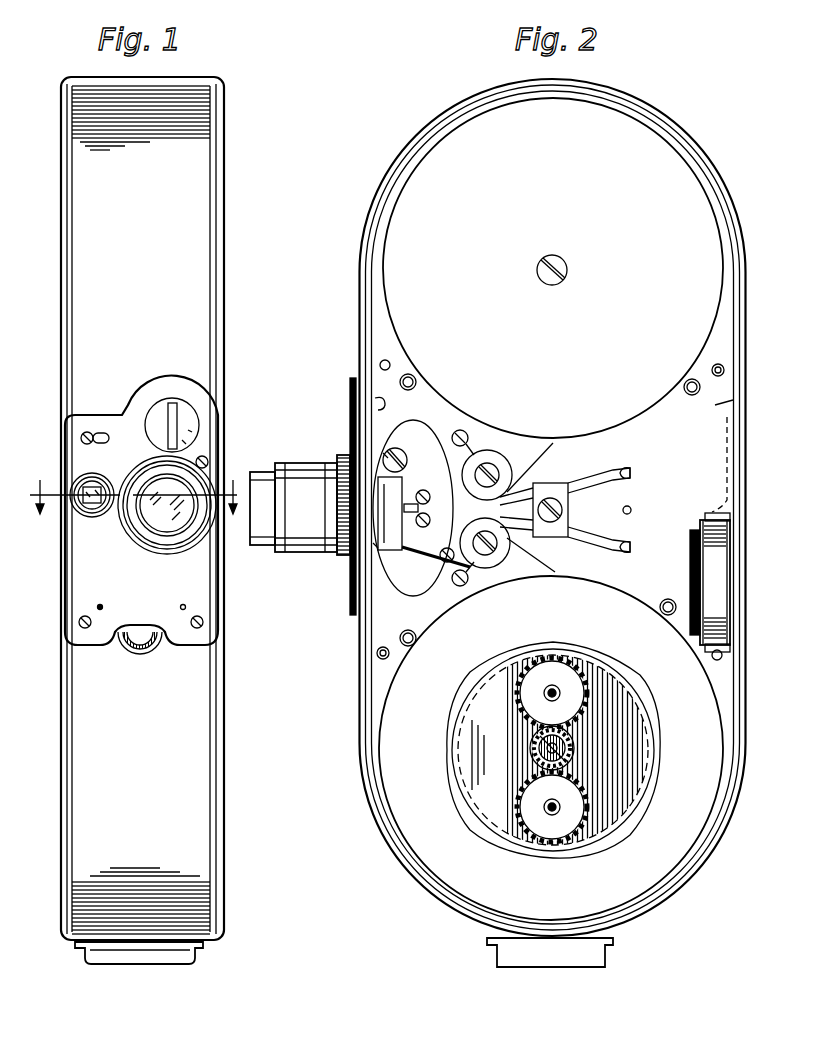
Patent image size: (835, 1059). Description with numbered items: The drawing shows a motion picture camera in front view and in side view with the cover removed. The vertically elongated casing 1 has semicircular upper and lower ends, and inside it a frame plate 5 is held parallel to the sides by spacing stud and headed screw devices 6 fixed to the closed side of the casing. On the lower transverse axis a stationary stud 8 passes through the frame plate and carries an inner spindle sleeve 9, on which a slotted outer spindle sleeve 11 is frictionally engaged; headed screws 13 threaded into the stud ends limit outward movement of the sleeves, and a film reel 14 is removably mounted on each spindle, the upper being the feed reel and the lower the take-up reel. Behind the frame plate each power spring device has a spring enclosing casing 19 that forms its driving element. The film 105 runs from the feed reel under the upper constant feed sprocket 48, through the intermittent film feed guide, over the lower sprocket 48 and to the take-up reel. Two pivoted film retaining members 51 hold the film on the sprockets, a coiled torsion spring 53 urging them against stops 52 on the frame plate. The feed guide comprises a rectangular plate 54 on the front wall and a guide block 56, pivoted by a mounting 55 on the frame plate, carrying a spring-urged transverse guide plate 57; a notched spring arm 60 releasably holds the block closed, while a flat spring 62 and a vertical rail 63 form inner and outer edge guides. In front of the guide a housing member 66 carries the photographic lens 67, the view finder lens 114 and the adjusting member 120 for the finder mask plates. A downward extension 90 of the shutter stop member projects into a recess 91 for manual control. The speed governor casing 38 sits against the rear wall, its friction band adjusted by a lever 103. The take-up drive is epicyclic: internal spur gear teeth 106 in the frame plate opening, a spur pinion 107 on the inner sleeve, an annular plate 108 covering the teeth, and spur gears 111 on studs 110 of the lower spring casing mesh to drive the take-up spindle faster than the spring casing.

In FIG. 1, the casing 1 is at (208, 232).
In FIG. 2, the casing 1 is at (698, 152).
In FIG. 2, the frame plate 5 is at (715, 405).
In FIG. 1, the spacing stud and headed screw devices 6 is at (137, 493).
In FIG. 2, the spacing stud and headed screw devices 6 is at (723, 365).
In FIG. 2, the stationary stud 8 is at (570, 750).
In FIG. 2, the inner spindle sleeve 9 is at (573, 733).
In FIG. 2, the spindle sleeves 11 is at (577, 773).
In FIG. 2, the headed screws 13 is at (566, 265).
In FIG. 2, the film reel 14 is at (425, 172).
In FIG. 2, the spring enclosing casing 19 is at (622, 762).
In FIG. 2, the speed governor casing 38 is at (723, 567).
In FIG. 2, the sprockets 48 is at (488, 457).
In FIG. 2, the film retaining members 51 is at (577, 483).
In FIG. 2, the stops 52 is at (628, 540).
In FIG. 2, the coiled torsion spring 53 is at (523, 483).
In FIG. 2, the rectangular plate 54 is at (375, 400).
In FIG. 2, the mounting 55 is at (383, 453).
In FIG. 2, the guide block 56 is at (402, 490).
In FIG. 2, the transverse guide plate 57 is at (373, 543).
In FIG. 2, the notched spring arm 60 is at (425, 562).
In FIG. 2, the flat spring 62 is at (435, 508).
In FIG. 2, the vertical rail 63 is at (315, 463).
In FIG. 1, the housing member 66 is at (203, 593).
In FIG. 2, the housing member 66 is at (350, 380).
In FIG. 1, the photographic lens 67 is at (180, 530).
In FIG. 2, the photographic lens 67 is at (277, 463).
In FIG. 1, the downward extension 90 is at (117, 650).
In FIG. 1, the recess 91 is at (153, 653).
In FIG. 2, the lever 103 is at (730, 493).
In FIG. 2, the film 105 is at (432, 427).
In FIG. 2, the internal spur gear teeth 106 is at (523, 850).
In FIG. 2, the spur pinion 107 is at (570, 737).
In FIG. 2, the annular plate 108 is at (468, 765).
In FIG. 2, the studs 110 is at (556, 686).
In FIG. 2, the spur gears 111 is at (523, 678).
In FIG. 1, the lens 114 is at (98, 490).
In FIG. 1, the adjusting member 120 is at (188, 415).